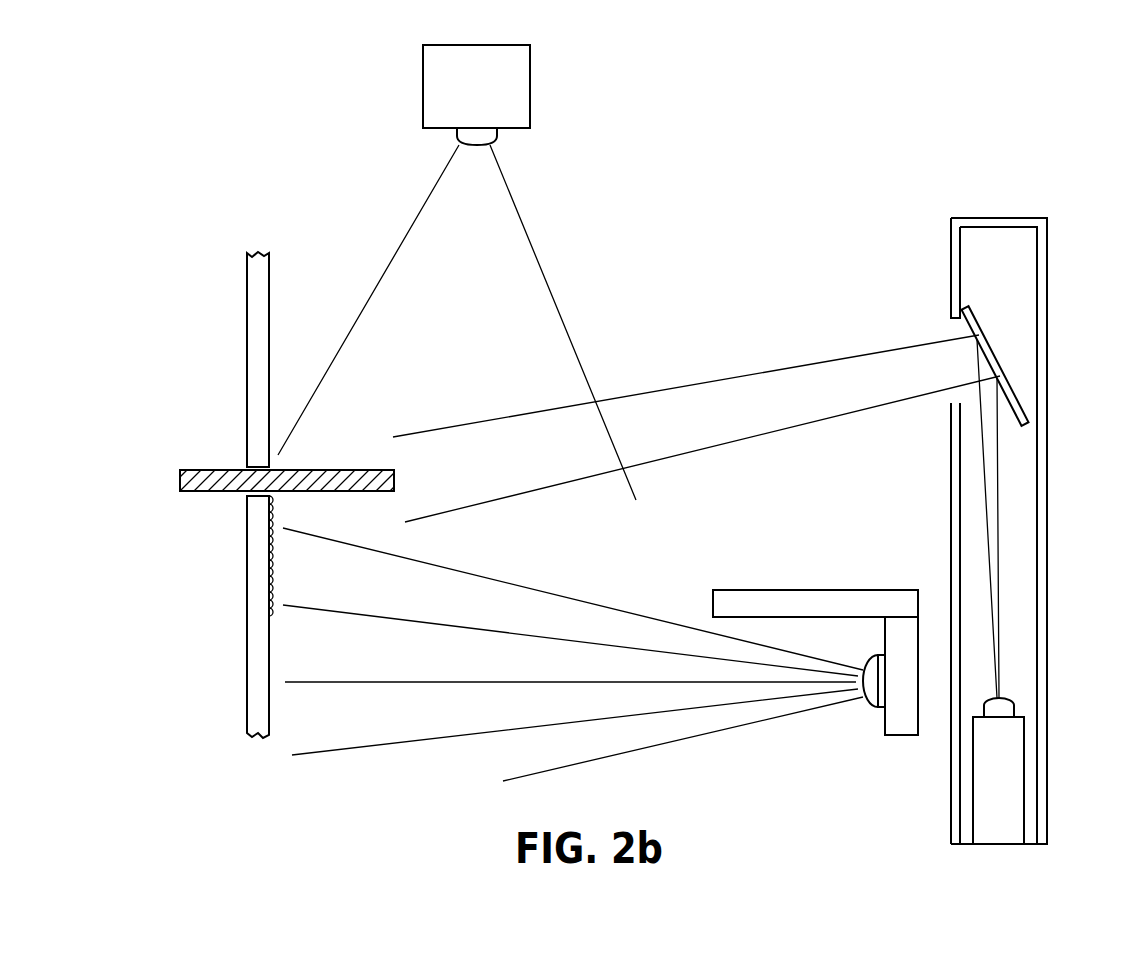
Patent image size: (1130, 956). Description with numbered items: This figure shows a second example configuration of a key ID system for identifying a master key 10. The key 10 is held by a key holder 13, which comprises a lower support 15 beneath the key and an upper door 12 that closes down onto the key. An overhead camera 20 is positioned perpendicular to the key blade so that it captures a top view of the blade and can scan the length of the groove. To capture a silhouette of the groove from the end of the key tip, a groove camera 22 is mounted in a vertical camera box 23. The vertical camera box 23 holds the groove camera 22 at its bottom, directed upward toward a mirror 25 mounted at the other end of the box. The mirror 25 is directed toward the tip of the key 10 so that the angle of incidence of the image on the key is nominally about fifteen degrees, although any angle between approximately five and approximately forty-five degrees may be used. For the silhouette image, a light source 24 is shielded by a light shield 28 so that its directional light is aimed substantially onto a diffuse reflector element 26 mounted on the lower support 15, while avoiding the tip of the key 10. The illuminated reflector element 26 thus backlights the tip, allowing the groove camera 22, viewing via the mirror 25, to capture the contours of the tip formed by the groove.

The master key 10 is at (348, 453).
The upper door 12 is at (244, 446).
The key holder 13 is at (165, 495).
The lower support 15 is at (258, 500).
The overhead camera 20 is at (556, 89).
The groove camera 22 is at (1046, 743).
The vertical camera box 23 is at (1012, 199).
The light source 24 is at (903, 627).
The mirror 25 is at (1014, 339).
The diffuse reflector element 26 is at (296, 573).
The light shield 28 is at (800, 569).